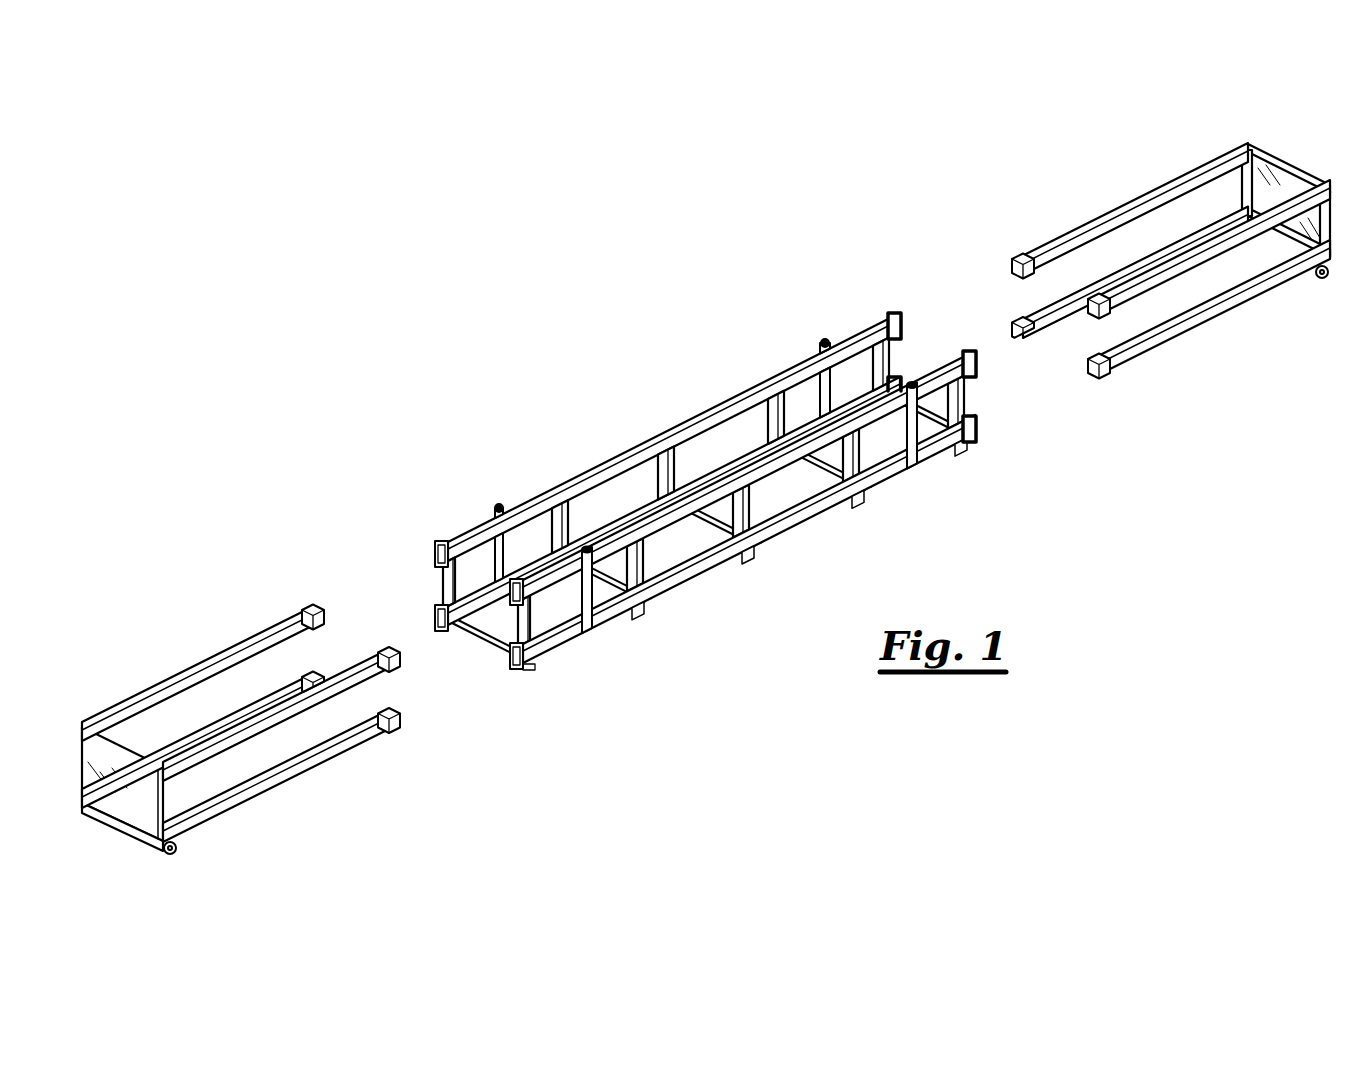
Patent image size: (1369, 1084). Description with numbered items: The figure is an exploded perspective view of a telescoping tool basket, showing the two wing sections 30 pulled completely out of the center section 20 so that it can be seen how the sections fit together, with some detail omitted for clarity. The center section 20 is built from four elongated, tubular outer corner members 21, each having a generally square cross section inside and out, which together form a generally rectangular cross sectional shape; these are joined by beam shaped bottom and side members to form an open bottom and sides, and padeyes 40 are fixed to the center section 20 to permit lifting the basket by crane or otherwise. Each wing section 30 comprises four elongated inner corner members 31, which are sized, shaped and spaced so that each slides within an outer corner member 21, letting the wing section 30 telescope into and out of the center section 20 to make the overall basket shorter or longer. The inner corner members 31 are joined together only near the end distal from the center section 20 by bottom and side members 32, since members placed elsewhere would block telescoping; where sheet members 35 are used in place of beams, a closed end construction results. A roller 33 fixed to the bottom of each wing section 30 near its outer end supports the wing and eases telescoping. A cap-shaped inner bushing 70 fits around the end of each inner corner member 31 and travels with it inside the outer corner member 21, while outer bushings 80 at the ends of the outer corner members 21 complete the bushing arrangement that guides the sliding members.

The center section 20 is at (679, 516).
The outer corner member 21 is at (709, 488).
The wing section 30 is at (693, 506).
The inner corner member 31 is at (706, 495).
The bottom and side members 32 is at (758, 496).
The roller 33 is at (729, 591).
The sheet members 35 is at (679, 477).
The padeyes 40 is at (697, 489).
The inner bushing 70 is at (716, 476).
The outer bushing 80 is at (679, 528).